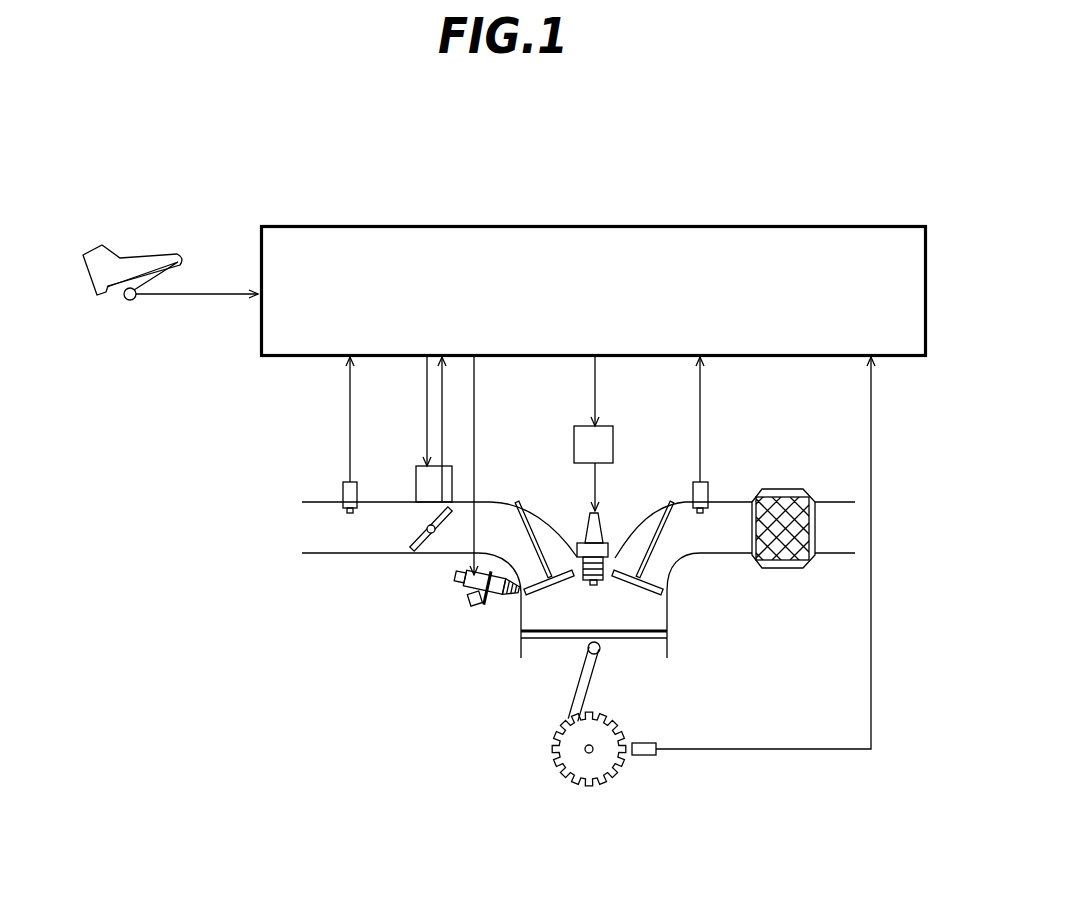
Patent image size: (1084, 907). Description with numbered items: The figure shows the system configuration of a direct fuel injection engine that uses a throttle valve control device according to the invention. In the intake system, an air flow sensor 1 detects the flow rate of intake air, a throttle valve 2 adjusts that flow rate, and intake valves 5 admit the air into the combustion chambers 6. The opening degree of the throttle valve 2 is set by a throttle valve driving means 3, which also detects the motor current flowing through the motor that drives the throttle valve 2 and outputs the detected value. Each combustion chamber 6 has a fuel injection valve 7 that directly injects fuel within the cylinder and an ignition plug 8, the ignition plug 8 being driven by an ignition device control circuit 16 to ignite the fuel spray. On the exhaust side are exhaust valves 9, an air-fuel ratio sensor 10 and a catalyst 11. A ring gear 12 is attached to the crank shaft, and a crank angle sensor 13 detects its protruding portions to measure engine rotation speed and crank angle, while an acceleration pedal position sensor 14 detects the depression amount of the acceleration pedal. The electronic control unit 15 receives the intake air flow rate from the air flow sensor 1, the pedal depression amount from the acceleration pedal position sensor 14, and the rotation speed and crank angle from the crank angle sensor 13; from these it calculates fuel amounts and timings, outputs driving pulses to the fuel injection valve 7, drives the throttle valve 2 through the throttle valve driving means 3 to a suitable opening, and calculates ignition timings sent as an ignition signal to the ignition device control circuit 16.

The air flow sensor 1 is at (343, 484).
The throttle valve 2 is at (420, 535).
The throttle valve driving means 3 is at (416, 466).
The intake valves 5 is at (537, 576).
The combustion chambers 6 is at (594, 655).
The fuel injection valve 7 is at (476, 607).
The ignition plug 8 is at (583, 534).
The exhaust valves 9 is at (683, 568).
The air-fuel ratio sensor 10 is at (693, 487).
The catalyst 11 is at (788, 496).
The ring gear 12 is at (583, 784).
The crank angle sensor 13 is at (644, 742).
The acceleration pedal position sensor 14 is at (128, 302).
The electronic control unit (ECU) 15 is at (318, 225).
The ignition device control circuit 16 is at (583, 426).